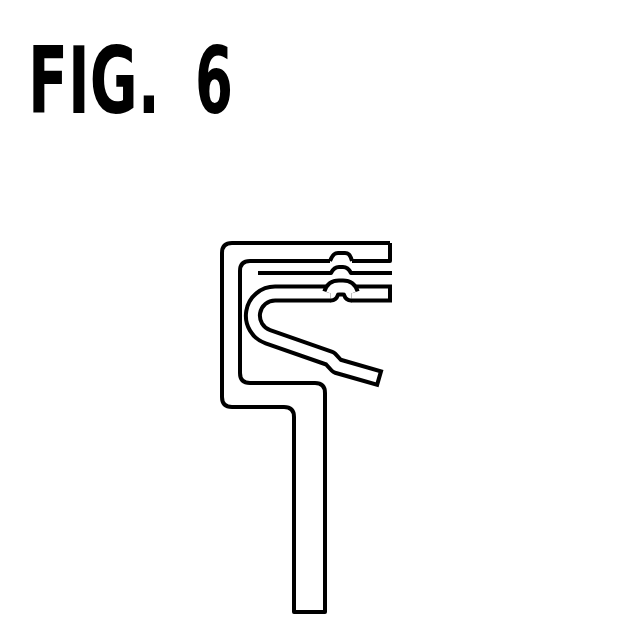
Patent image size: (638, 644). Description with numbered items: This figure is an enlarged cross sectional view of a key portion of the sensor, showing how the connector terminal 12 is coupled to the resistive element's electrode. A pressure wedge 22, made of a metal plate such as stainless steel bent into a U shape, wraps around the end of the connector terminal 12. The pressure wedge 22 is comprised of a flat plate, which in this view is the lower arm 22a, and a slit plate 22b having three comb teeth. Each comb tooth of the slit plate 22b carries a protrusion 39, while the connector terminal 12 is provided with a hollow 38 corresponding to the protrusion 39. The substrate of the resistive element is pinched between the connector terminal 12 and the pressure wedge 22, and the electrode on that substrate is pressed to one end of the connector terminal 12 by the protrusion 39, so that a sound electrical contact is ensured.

The connector terminal 12 is at (240, 408).
The pressure wedge 22 is at (313, 319).
The lower arm of spring clip 22a is at (263, 343).
The slit plate 22b is at (392, 293).
The hollow 38 is at (345, 257).
The protrusion 39 is at (336, 289).